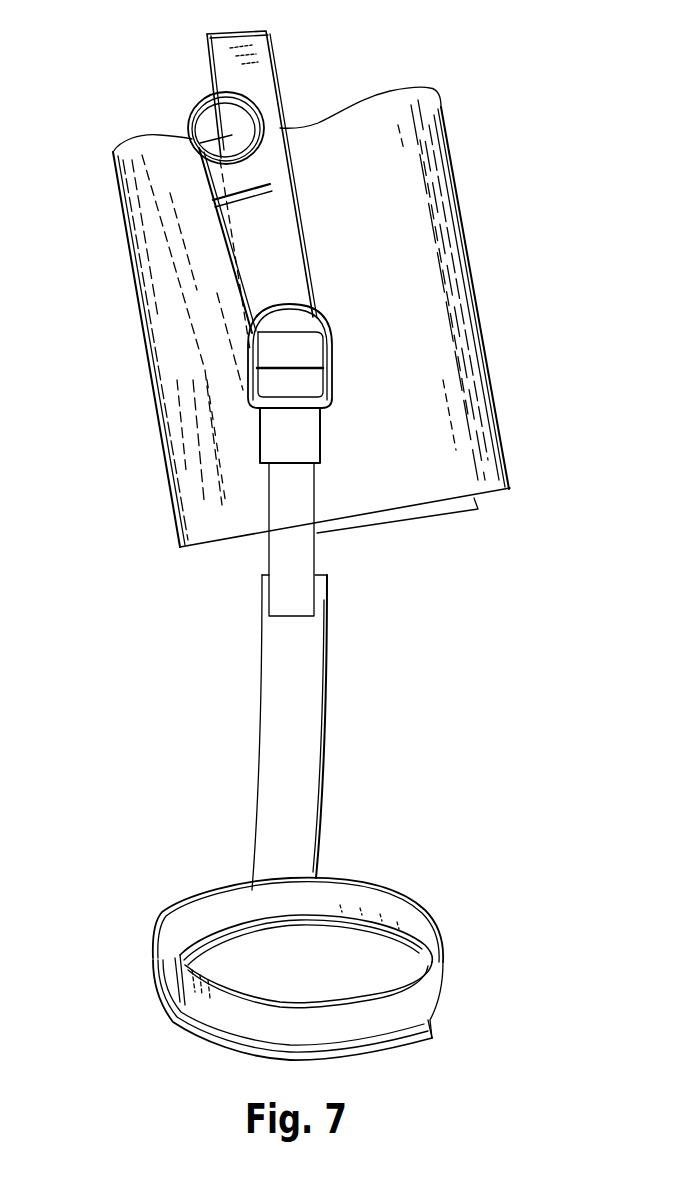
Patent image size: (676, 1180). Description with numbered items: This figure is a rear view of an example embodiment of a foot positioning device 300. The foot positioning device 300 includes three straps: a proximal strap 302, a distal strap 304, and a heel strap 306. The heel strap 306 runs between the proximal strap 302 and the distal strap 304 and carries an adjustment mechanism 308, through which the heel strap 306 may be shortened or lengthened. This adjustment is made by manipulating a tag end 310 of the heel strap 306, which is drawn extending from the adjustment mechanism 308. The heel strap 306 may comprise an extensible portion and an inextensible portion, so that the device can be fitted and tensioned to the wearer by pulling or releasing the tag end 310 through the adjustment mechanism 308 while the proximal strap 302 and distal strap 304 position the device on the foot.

The foot positioning device 300 is at (110, 94).
The proximal strap 302 is at (180, 462).
The distal strap 304 is at (233, 914).
The heel strap 306 is at (295, 540).
The adjustment mechanism 308 is at (312, 362).
The tag end 310 is at (257, 253).